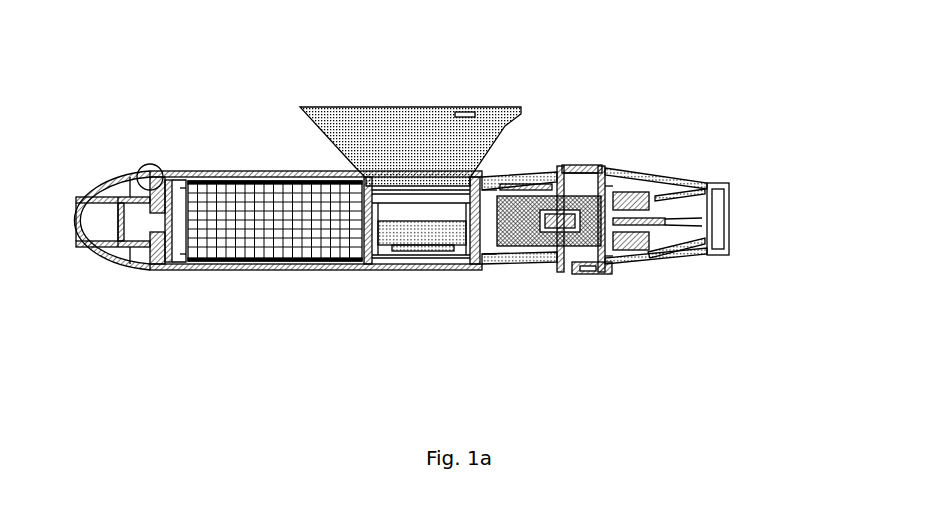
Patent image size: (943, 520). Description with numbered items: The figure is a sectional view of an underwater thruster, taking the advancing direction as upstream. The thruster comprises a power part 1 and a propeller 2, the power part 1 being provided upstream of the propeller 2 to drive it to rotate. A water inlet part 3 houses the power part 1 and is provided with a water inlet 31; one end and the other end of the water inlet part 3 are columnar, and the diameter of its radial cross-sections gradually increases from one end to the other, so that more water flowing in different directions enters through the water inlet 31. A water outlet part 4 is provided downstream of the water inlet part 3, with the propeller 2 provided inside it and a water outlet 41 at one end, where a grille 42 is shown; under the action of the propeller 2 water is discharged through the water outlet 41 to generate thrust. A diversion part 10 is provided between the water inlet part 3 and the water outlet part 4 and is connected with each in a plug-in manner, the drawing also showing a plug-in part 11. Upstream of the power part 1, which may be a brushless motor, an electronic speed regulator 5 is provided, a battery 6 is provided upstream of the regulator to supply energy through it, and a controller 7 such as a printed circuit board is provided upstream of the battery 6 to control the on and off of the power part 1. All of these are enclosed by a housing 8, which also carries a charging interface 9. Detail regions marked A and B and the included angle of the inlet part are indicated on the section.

The power part 1 is at (572, 206).
The propeller 2 is at (650, 194).
The water inlet part 3 is at (514, 268).
The water outlet part 4 is at (692, 264).
The electronic speed regulator 5 is at (406, 246).
The battery 6 is at (278, 246).
The controller 7 is at (176, 257).
The housing 8 is at (78, 262).
The charging interface 9 is at (120, 238).
The diversion part 10 is at (605, 280).
The plug-in part 11 is at (472, 108).
The water inlet 31 is at (500, 198).
The water outlet 41 is at (728, 222).
The grille 42 is at (677, 246).
The detail A is at (160, 166).
The detail B is at (356, 167).